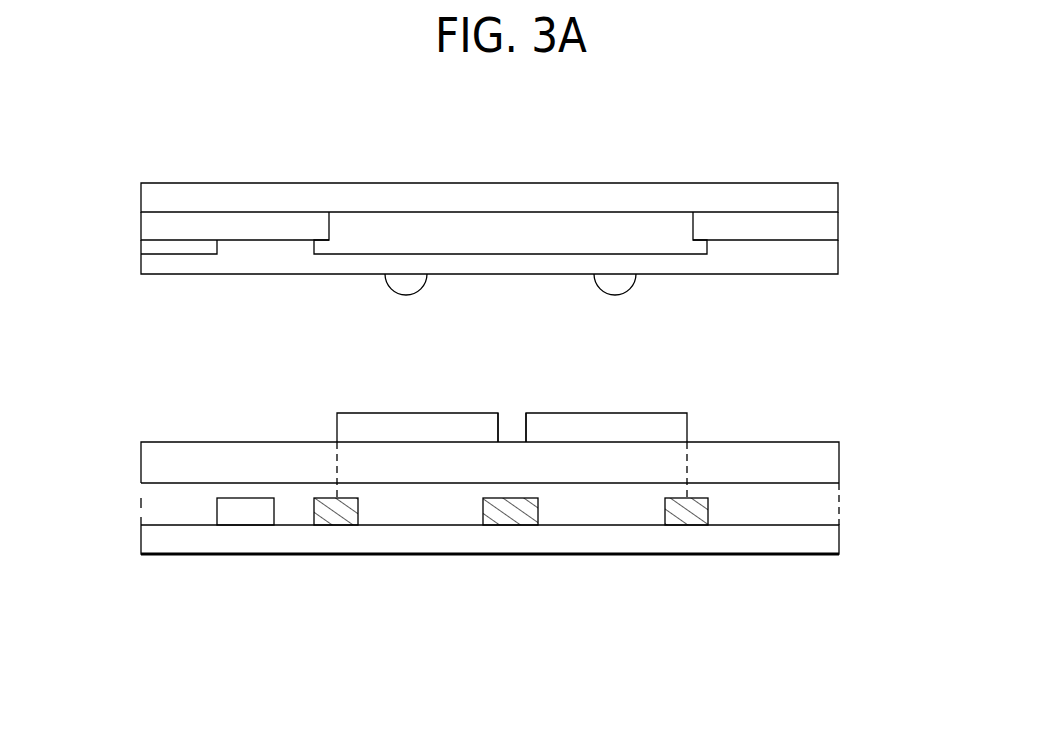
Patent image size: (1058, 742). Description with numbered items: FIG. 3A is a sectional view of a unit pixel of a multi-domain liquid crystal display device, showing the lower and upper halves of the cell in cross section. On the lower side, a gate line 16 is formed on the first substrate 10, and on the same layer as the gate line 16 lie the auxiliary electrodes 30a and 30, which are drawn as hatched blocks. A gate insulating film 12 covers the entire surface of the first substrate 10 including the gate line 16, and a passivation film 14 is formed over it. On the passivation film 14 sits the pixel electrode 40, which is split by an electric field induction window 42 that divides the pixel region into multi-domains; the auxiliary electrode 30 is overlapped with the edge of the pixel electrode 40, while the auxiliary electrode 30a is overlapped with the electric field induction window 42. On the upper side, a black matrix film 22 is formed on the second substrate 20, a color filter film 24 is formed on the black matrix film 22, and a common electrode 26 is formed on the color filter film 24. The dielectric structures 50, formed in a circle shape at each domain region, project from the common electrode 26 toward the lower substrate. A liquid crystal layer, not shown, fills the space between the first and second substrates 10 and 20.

The first substrate 10 is at (832, 536).
The gate insulating film 12 is at (148, 504).
The passivation film 14 is at (832, 470).
The gate line 16 is at (247, 513).
The second substrate 20 is at (838, 197).
The black matrix film 22 is at (147, 222).
The color filter film 24 is at (618, 225).
The common electrode 26 is at (838, 255).
The auxiliary electrode 30 is at (340, 512).
The auxiliary electrode 30a is at (508, 512).
The pixel electrode 40 is at (424, 420).
The electric field induction window 42 is at (512, 422).
The dielectric structure 50 is at (616, 292).